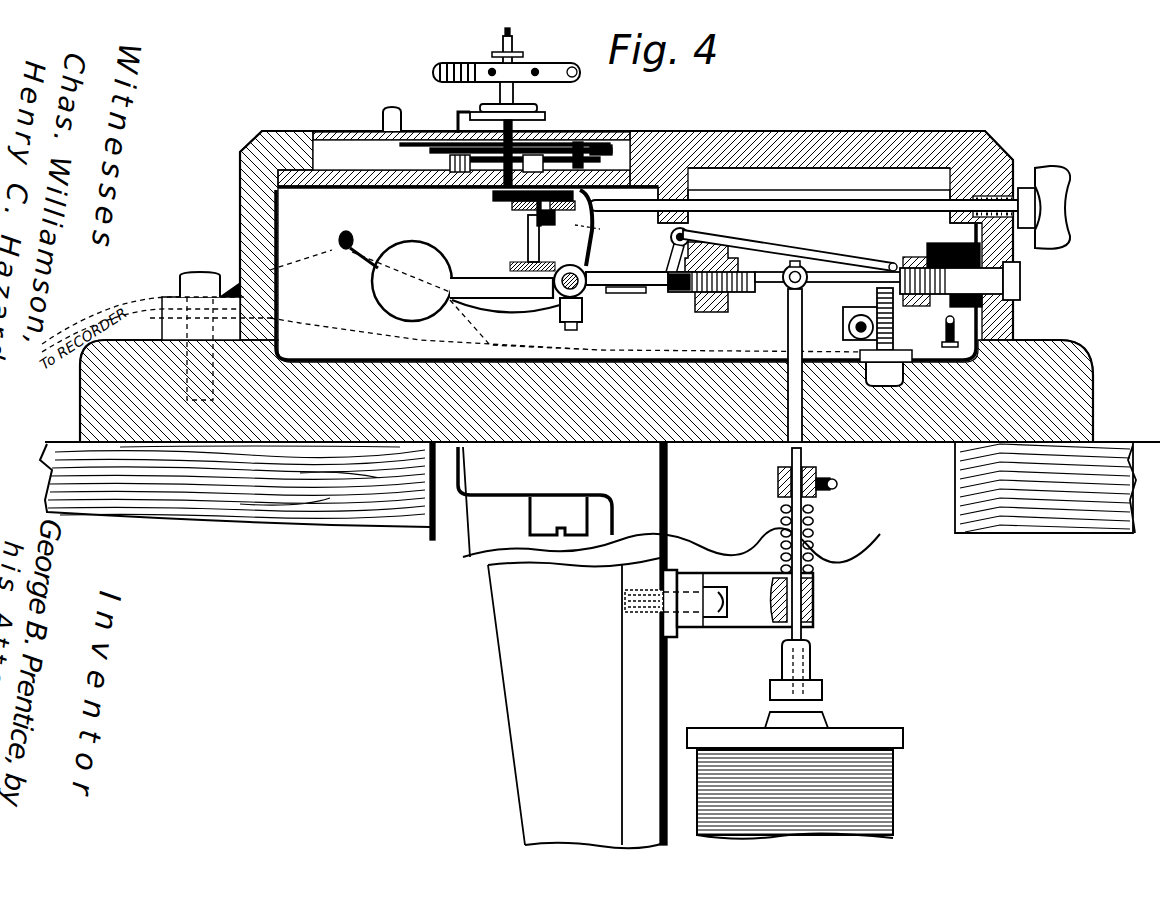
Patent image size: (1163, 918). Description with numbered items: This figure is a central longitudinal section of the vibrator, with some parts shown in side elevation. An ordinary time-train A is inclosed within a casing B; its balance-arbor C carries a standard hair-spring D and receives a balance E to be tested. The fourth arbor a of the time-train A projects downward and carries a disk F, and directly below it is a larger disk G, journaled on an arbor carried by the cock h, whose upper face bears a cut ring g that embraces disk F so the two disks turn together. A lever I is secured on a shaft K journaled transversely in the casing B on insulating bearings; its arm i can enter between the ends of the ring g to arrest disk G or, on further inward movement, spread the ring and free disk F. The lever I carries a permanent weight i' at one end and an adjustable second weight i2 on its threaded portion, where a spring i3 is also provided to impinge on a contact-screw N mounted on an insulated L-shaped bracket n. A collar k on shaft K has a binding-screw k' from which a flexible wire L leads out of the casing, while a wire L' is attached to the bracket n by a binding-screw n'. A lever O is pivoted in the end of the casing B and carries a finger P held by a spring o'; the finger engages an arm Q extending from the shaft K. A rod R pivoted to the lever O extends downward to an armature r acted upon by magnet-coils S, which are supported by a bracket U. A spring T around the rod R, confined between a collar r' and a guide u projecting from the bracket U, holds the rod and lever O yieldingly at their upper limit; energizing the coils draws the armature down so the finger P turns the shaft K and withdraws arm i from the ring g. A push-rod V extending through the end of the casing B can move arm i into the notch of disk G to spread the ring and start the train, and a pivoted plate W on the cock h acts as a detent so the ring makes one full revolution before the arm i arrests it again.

The casing B is at (326, 160).
The rod V is at (792, 211).
The balance E is at (556, 72).
The balance-arbor C is at (520, 108).
The hair-spring D is at (487, 115).
The time-train A is at (574, 141).
The disk F is at (494, 198).
The fourth arbor a is at (516, 206).
The disk G is at (512, 212).
The plate W is at (552, 226).
The cock h is at (510, 265).
The flexible wire L is at (466, 288).
The wire L' is at (344, 279).
The permanent weight i' is at (575, 301).
The shaft K is at (587, 270).
The collar k is at (551, 320).
The binding-screw k' is at (590, 344).
The lever I is at (625, 287).
The arm Q is at (645, 293).
The ring g is at (594, 195).
The arm i is at (593, 235).
The finger P is at (686, 262).
The second weight i2 is at (705, 312).
The spring o' is at (790, 249).
The lever O is at (824, 272).
The L-shaped bracket n is at (967, 298).
The binding-screw n' is at (922, 366).
The rod R is at (788, 327).
The contact-screw N is at (858, 313).
The spring i3 is at (846, 292).
The bracket U is at (508, 630).
The guide u is at (768, 582).
The spring T is at (812, 547).
The collar r' is at (791, 482).
The armature r is at (806, 670).
The magnet-coils S is at (805, 775).